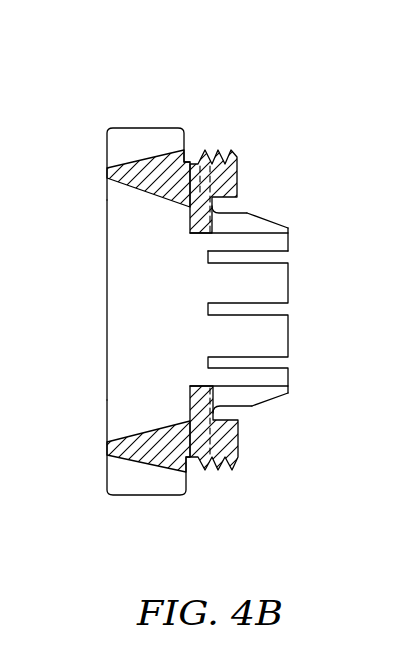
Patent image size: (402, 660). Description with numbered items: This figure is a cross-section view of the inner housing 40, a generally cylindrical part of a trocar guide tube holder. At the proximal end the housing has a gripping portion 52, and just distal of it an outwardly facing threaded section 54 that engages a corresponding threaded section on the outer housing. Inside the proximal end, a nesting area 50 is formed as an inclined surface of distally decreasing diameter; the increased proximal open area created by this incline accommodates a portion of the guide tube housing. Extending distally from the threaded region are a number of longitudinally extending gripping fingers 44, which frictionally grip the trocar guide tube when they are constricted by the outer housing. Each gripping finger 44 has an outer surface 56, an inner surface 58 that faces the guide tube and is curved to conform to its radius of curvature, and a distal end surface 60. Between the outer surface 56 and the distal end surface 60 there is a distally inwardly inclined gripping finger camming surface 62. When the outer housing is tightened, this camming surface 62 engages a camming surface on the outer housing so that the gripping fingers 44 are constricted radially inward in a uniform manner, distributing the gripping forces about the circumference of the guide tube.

The inner housing 40 is at (186, 83).
The gripping fingers 44 is at (238, 219).
The nesting area 50 is at (108, 198).
The gripping portion 52 is at (108, 144).
The threaded section 54 is at (237, 158).
The outer surface 56 is at (248, 217).
The inner surface 58 is at (283, 252).
The distal end surface 60 is at (289, 240).
The gripping finger camming surface 62 is at (285, 226).